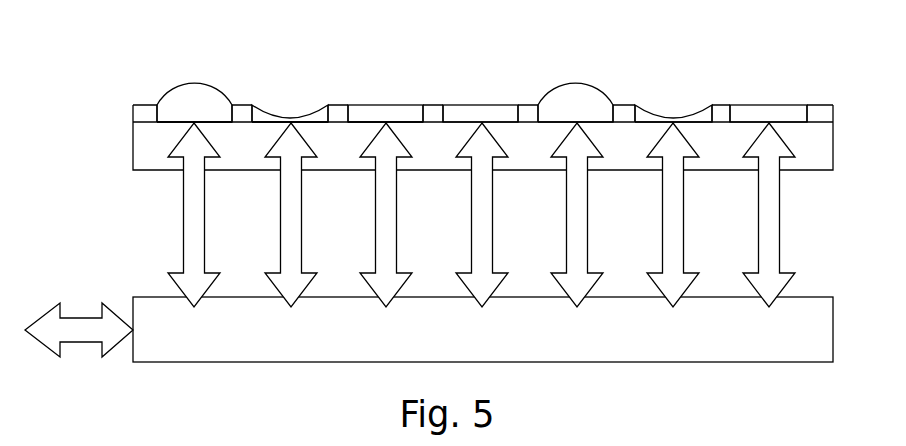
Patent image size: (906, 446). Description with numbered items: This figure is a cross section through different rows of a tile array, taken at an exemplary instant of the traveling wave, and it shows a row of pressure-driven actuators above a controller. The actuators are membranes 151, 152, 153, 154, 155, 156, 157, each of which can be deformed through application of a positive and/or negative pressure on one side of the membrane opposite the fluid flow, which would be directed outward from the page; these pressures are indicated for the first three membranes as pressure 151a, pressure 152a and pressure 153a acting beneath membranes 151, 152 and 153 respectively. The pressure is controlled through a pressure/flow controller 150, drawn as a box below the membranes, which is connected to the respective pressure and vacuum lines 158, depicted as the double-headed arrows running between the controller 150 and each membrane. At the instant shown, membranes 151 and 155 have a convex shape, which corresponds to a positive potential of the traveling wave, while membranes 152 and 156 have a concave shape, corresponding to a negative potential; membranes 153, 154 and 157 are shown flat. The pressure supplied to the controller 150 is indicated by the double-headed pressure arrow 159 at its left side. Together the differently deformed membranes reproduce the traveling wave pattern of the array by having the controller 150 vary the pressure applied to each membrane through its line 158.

The pressure/flow controller 150 is at (665, 363).
The membrane 151 is at (200, 83).
The positive and/or negative pressure 151a is at (180, 121).
The membrane 152 is at (260, 103).
The positive and/or negative pressure 152a is at (275, 120).
The membrane 153 is at (385, 103).
The positive and/or negative pressure 153a is at (403, 120).
The membrane 154 is at (488, 103).
The membrane 155 is at (563, 83).
The membrane 156 is at (695, 112).
The membrane 157 is at (767, 103).
The pressure and vacuum lines 158 is at (186, 237).
The pressure input 159 is at (72, 318).